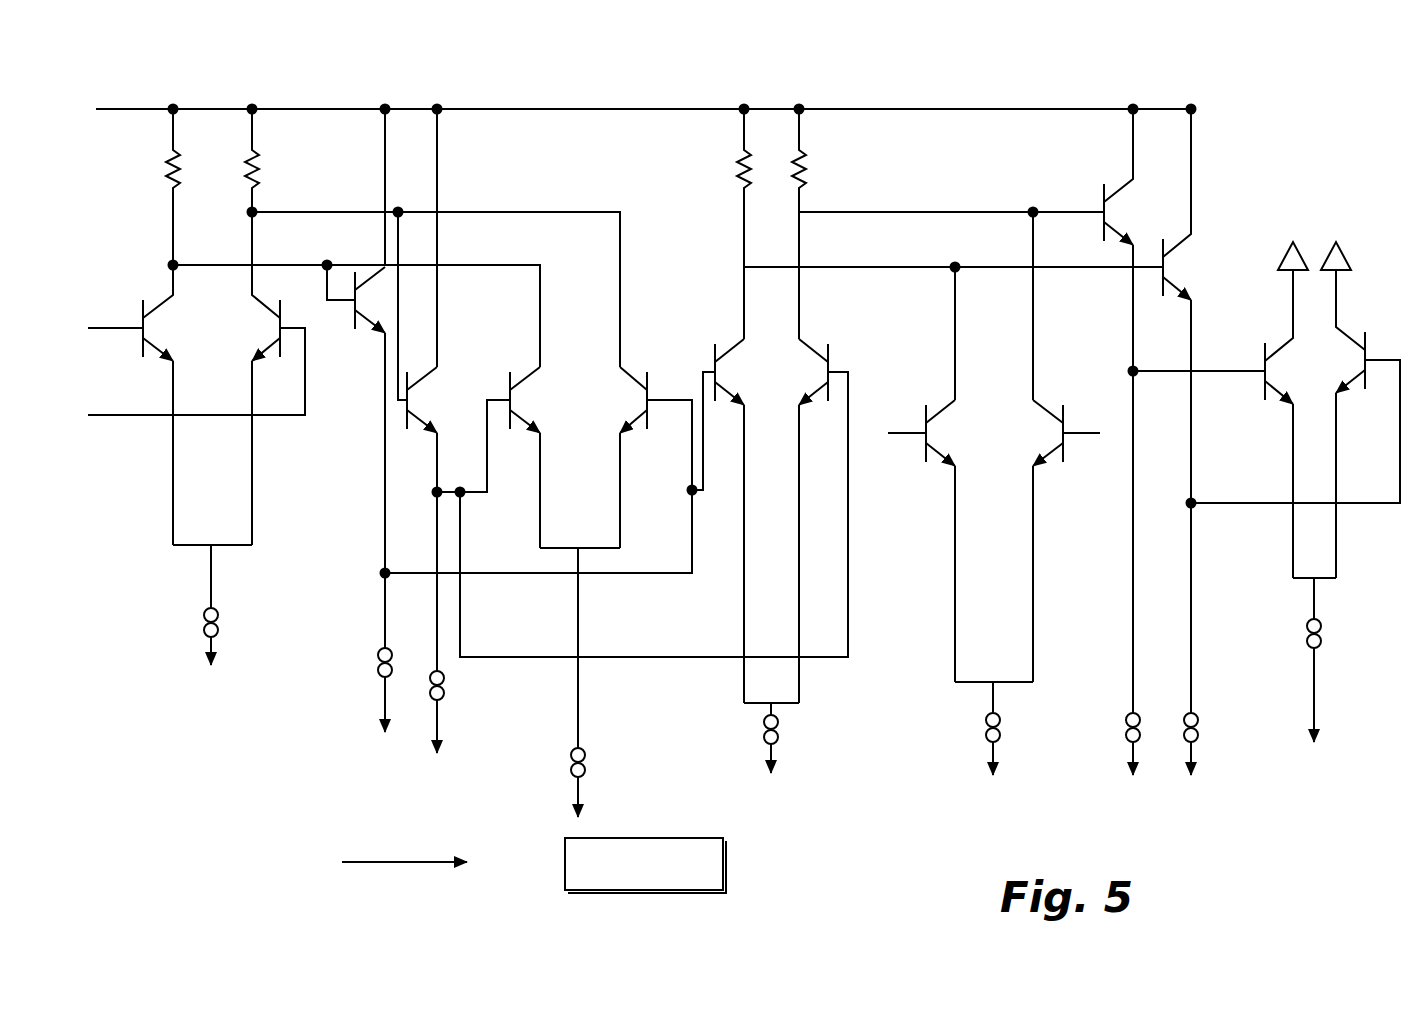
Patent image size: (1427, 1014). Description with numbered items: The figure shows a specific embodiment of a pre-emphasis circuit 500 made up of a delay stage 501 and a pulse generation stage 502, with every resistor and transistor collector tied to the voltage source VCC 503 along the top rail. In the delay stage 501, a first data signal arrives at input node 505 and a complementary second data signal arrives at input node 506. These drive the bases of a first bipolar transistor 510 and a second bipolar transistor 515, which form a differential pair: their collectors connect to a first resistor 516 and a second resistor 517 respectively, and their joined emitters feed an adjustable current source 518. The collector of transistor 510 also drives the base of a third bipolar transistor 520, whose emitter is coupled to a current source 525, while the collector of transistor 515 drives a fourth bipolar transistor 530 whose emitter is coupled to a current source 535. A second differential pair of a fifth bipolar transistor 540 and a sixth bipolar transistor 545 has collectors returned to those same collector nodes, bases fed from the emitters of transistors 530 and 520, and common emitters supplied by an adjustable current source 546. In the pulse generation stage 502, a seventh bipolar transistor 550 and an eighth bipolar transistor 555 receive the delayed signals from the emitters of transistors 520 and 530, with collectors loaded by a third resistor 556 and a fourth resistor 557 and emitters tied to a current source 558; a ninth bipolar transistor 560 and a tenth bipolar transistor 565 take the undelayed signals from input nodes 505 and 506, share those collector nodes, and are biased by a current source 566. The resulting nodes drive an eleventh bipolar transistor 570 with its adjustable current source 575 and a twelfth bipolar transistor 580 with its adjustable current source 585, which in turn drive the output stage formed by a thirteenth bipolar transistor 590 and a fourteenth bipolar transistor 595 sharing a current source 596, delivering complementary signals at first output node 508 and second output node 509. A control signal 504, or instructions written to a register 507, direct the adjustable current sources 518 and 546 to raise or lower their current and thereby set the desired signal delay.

The pre-emphasis circuit 500 is at (877, 78).
The delay stage 501 is at (295, 680).
The pulse generation stage 502 is at (910, 730).
The voltage source VCC 503 is at (641, 93).
The control signal 504 is at (404, 847).
The input node 505 is at (485, 367).
The input node 506 is at (583, 390).
The register 507 is at (645, 865).
The first output node 508 is at (1274, 232).
The second output node 509 is at (1351, 232).
The first bipolar transistor 510 is at (170, 405).
The second bipolar transistor 515 is at (255, 378).
The first resistor 516 is at (150, 187).
The second resistor 517 is at (278, 160).
The adjustable current source 518 is at (220, 605).
The third bipolar transistor 520 is at (356, 316).
The current source 525 is at (364, 690).
The fourth bipolar transistor 530 is at (438, 519).
The current source 535 is at (461, 712).
The fifth bipolar transistor 540 is at (537, 457).
The sixth bipolar transistor 545 is at (622, 457).
The adjustable current source 546 is at (588, 682).
The seventh bipolar transistor 550 is at (739, 521).
The eighth bipolar transistor 555 is at (805, 521).
The third resistor 556 is at (721, 187).
The fourth resistor 557 is at (824, 160).
The current source 558 is at (786, 738).
The ninth bipolar transistor 560 is at (951, 541).
The tenth bipolar transistor 565 is at (1037, 541).
The current source 566 is at (1001, 728).
The eleventh bipolar transistor 570 is at (1135, 411).
The adjustable current source 575 is at (1111, 744).
The twelfth bipolar transistor 580 is at (1196, 411).
The adjustable current source 585 is at (1215, 744).
The thirteenth bipolar transistor 590 is at (1293, 424).
The fourteenth bipolar transistor 595 is at (1343, 424).
The current source 596 is at (1331, 660).